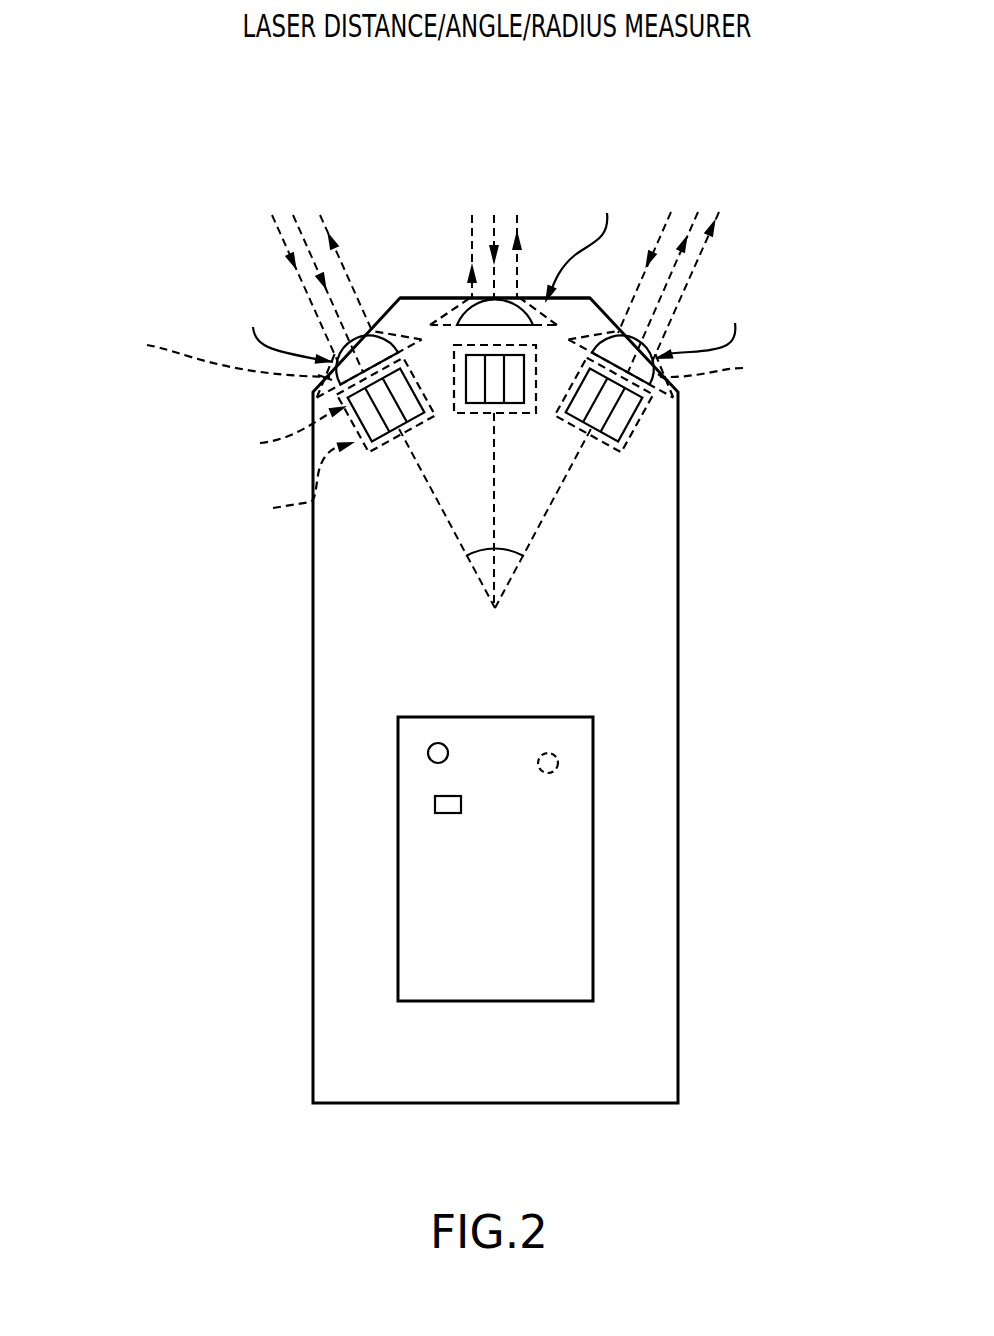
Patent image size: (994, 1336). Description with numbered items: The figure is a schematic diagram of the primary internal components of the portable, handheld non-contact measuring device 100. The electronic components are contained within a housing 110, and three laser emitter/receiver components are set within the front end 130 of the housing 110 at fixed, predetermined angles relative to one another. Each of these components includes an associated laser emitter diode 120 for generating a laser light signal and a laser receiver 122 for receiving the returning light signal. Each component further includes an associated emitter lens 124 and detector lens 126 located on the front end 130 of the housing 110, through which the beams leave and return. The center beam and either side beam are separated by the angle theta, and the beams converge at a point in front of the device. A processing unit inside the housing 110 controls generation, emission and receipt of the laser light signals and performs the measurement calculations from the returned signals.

The non-contact measuring device 100 is at (472, 642).
The housing 110 is at (700, 648).
The laser emitter diode 120 is at (373, 437).
The laser receiver 122 is at (393, 440).
The emitter lens 124 is at (388, 343).
The detector lens 126 is at (333, 369).
The front end 130 is at (425, 305).